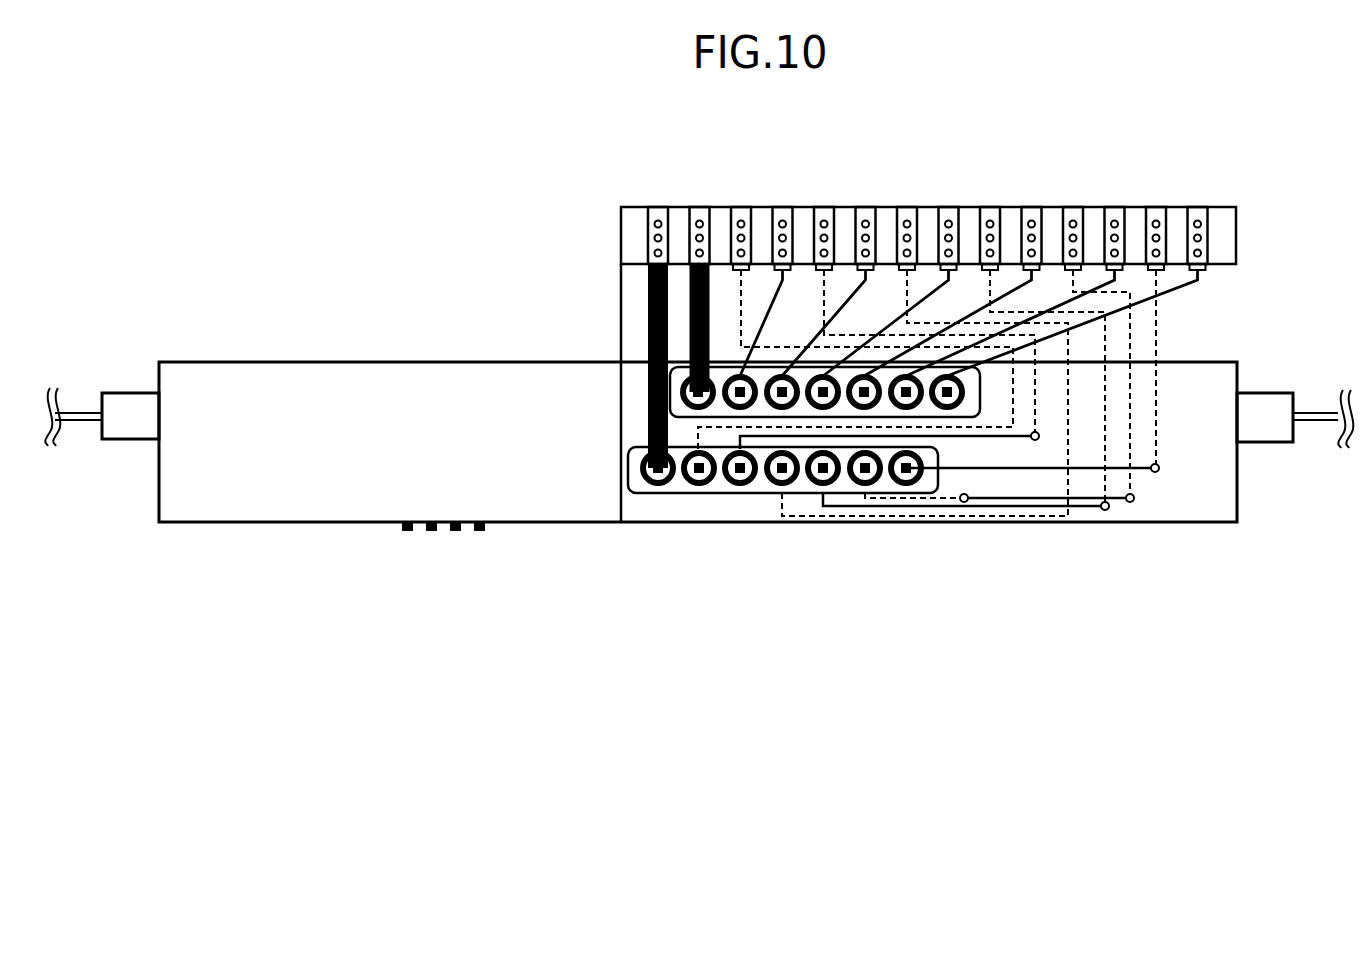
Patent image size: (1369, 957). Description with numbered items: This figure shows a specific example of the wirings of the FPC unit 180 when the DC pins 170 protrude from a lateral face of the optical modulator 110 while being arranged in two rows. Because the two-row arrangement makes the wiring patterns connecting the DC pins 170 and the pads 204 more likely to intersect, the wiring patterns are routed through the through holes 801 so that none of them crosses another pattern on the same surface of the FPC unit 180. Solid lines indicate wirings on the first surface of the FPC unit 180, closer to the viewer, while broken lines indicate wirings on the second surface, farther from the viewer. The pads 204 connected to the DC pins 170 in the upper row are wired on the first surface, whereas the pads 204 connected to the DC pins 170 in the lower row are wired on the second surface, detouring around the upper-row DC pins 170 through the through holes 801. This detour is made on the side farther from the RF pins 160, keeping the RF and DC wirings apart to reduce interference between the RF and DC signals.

The optical modulator 110 is at (215, 362).
The RF pins 160 is at (395, 530).
The DC pins 170 is at (659, 470).
The FPC unit 180 is at (963, 356).
The pads 204 is at (658, 207).
The through holes 801 is at (1105, 510).